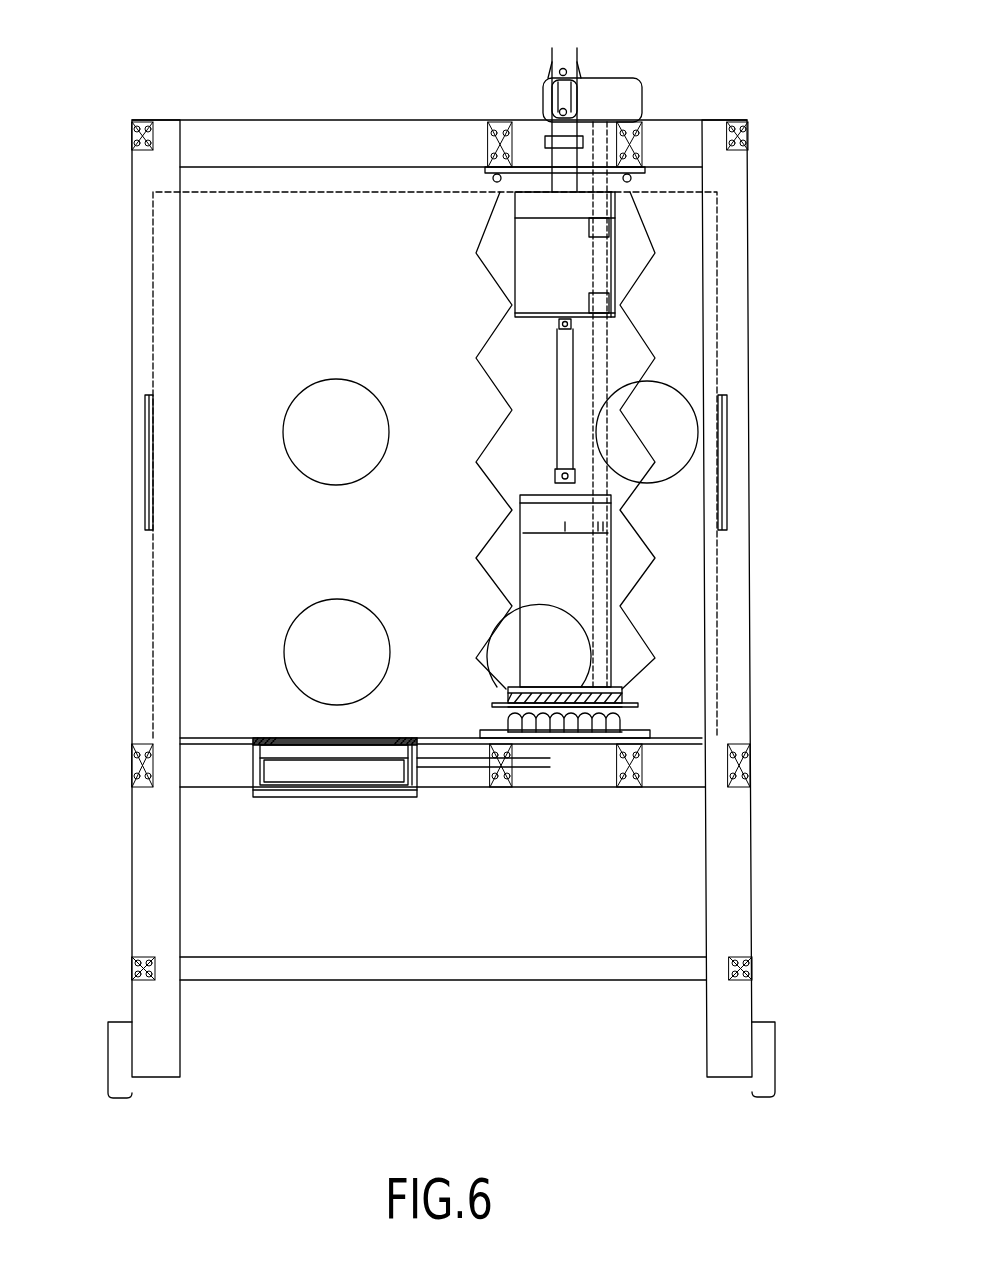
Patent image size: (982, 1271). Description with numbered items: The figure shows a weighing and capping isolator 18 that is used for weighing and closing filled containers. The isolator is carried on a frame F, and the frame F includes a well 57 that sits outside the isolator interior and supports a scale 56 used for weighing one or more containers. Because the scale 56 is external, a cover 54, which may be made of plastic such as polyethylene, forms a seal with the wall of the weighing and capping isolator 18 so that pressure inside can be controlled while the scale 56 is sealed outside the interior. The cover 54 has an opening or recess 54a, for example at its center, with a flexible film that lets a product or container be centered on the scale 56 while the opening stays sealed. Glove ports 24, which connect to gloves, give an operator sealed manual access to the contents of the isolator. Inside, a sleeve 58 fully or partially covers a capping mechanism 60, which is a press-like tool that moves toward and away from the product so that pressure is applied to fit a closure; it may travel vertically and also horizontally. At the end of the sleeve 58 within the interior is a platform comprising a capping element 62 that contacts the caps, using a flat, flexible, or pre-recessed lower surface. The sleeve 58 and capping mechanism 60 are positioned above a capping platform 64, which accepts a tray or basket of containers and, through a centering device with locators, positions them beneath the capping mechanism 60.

The weighing and capping isolator 18 is at (293, 98).
The glove ports 24 is at (338, 381).
The cover 54 is at (272, 735).
The opening or recess 54a is at (385, 752).
The scale 56 is at (277, 772).
The well 57 is at (337, 797).
The sleeve 58 is at (642, 335).
The capping mechanism 60 is at (597, 580).
The capping element 62 is at (623, 692).
The capping platform 64 is at (645, 730).
The frame F is at (465, 790).